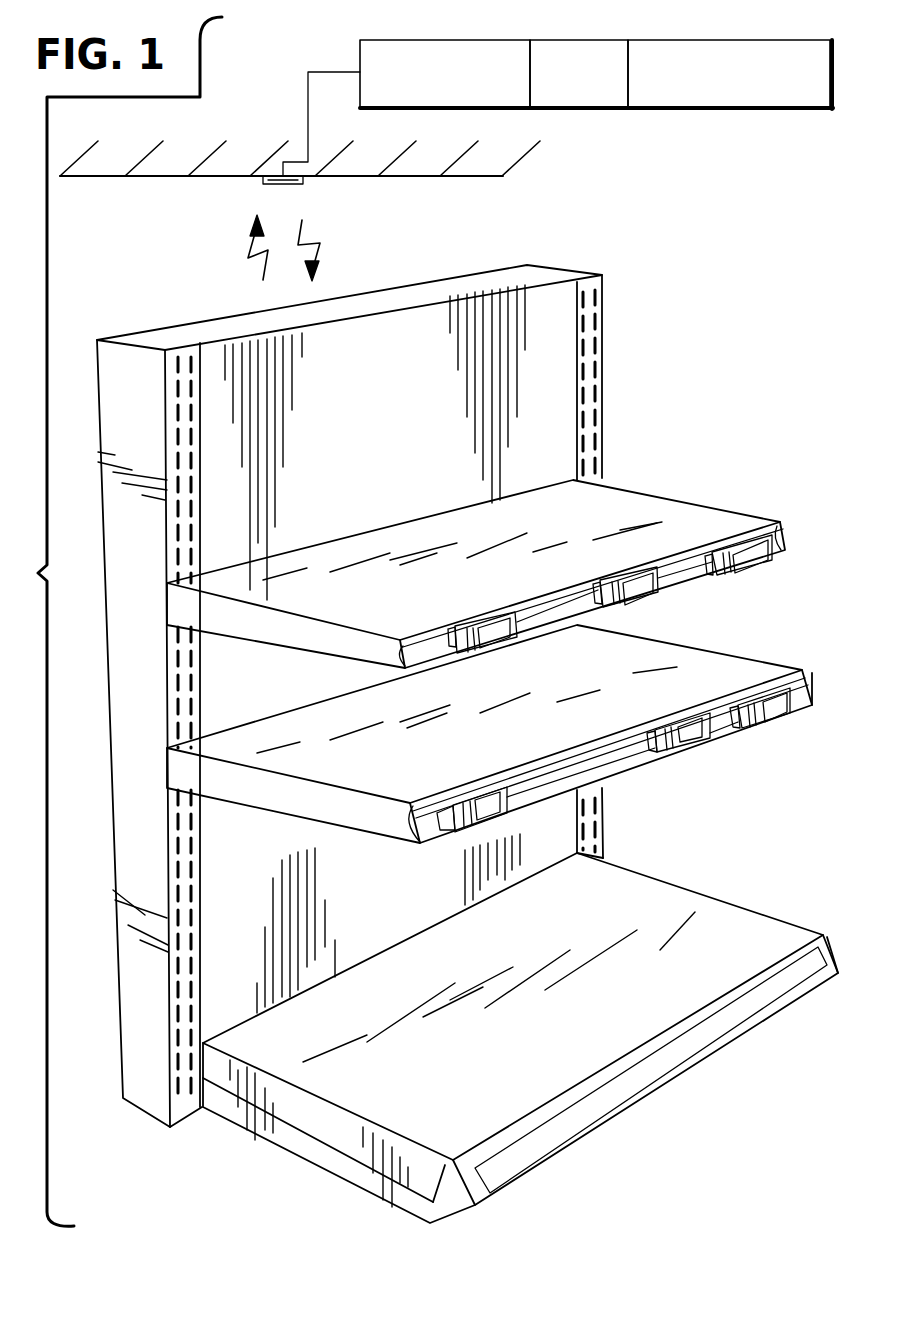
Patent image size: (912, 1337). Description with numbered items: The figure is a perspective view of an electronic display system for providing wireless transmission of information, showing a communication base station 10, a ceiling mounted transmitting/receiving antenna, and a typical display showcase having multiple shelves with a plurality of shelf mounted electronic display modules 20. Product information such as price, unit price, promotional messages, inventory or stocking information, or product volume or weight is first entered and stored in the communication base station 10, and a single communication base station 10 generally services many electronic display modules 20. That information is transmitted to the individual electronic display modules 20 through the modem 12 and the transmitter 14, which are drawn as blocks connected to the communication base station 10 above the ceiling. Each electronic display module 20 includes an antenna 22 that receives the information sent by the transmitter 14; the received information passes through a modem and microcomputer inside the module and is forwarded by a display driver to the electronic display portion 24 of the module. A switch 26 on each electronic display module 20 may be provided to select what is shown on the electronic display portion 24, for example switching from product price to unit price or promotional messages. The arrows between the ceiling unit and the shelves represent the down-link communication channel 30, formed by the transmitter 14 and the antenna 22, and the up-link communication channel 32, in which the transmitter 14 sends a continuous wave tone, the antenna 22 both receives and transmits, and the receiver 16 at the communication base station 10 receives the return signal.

The communication base station 10 is at (730, 108).
The modem 12 is at (582, 108).
The transmitter 14 is at (495, 37).
The receiver 16 is at (267, 188).
The electronic display module 20 is at (511, 661).
The antenna 22 is at (480, 652).
The electronic display portion 24 is at (490, 627).
The switch 26 is at (452, 637).
The down-link communication channel 30 is at (320, 244).
The up-link communication channel 32 is at (245, 257).